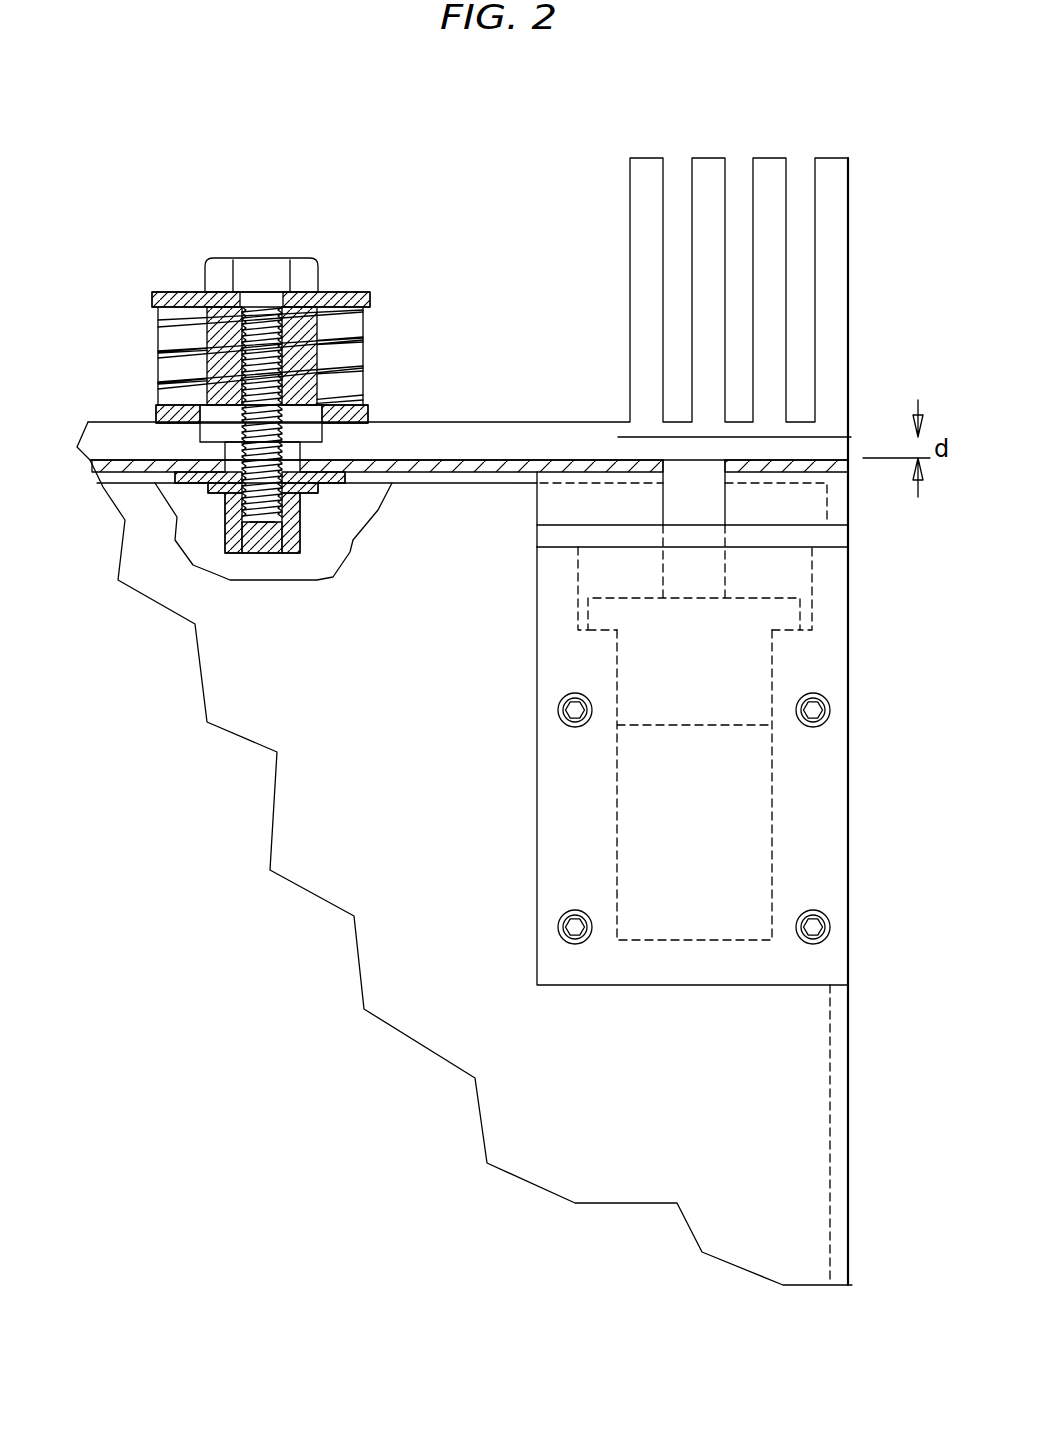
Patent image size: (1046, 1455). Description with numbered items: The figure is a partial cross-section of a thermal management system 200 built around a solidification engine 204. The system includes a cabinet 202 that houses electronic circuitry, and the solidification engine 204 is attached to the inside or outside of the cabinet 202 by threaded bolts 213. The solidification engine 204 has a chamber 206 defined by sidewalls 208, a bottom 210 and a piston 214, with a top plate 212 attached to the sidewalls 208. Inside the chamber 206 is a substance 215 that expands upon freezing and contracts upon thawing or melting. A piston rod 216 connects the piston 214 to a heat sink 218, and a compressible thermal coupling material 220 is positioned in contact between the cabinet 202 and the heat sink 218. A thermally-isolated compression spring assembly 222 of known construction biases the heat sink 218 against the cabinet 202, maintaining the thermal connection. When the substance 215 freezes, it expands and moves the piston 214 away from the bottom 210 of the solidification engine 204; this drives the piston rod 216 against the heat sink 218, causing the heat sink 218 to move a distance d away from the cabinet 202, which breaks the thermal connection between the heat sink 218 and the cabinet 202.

The thermal management system 200 is at (369, 1073).
The cabinet 202 is at (807, 1182).
The solidification engine 204 is at (503, 827).
The chamber 206 is at (748, 798).
The sidewalls 208 is at (805, 842).
The bottom 210 is at (690, 973).
The top plate 212 is at (833, 533).
The threaded bolts 213 is at (560, 712).
The piston 214 is at (752, 683).
The substance 215 is at (711, 812).
The piston rod 216 is at (710, 578).
The heat sink 218 is at (848, 272).
The thermal coupling material 220 is at (457, 468).
The thermally-isolated compression spring assembly 222 is at (307, 240).